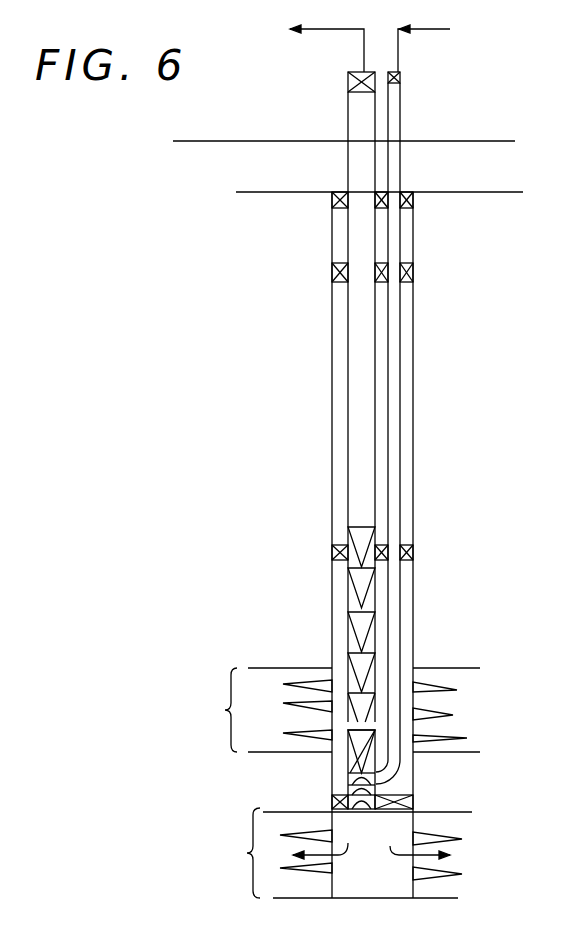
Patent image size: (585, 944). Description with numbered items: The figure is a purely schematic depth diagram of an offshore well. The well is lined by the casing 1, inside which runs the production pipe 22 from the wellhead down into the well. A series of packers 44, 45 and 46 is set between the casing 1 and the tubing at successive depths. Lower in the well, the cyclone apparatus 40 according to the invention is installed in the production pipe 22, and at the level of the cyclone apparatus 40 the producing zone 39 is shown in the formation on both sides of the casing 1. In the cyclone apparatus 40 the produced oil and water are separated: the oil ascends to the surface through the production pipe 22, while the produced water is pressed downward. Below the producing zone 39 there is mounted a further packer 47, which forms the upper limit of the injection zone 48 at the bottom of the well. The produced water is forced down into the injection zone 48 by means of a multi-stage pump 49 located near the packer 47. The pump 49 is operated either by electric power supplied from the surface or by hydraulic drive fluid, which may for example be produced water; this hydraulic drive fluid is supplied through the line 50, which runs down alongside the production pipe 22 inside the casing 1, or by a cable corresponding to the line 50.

The casing 1 is at (413, 429).
The production pipe 22 is at (367, 368).
The producing zone 39 is at (453, 702).
The cyclone apparatus 40 is at (362, 623).
The packer 44 is at (413, 205).
The packer 45 is at (413, 271).
The packer 46 is at (413, 553).
The packer 47 is at (413, 798).
The injection zone 48 is at (452, 865).
The multi-stage pump 49 is at (377, 786).
The line 50 is at (395, 475).